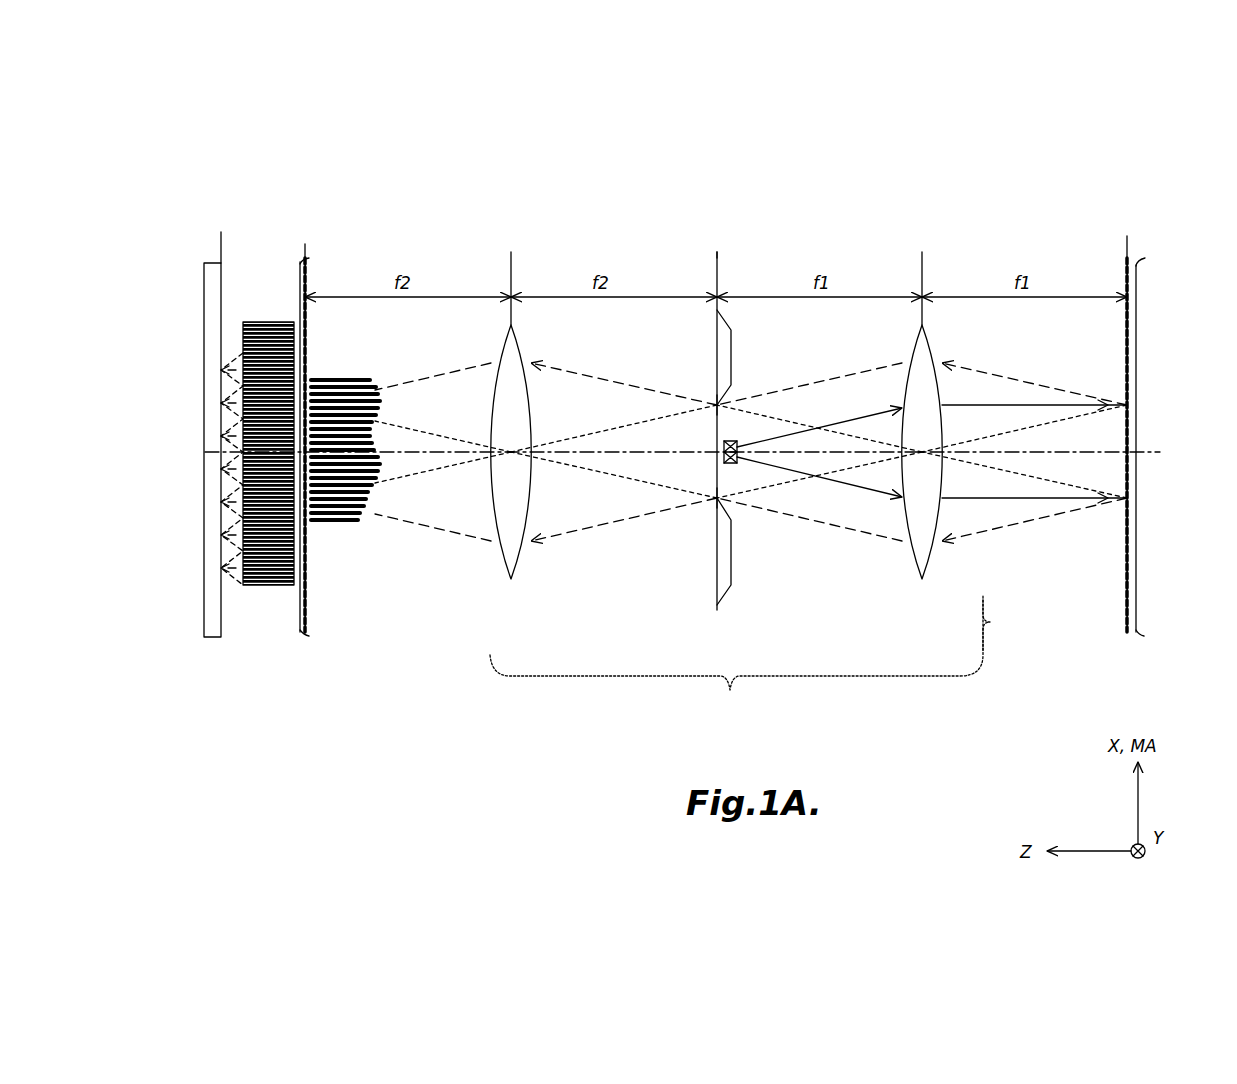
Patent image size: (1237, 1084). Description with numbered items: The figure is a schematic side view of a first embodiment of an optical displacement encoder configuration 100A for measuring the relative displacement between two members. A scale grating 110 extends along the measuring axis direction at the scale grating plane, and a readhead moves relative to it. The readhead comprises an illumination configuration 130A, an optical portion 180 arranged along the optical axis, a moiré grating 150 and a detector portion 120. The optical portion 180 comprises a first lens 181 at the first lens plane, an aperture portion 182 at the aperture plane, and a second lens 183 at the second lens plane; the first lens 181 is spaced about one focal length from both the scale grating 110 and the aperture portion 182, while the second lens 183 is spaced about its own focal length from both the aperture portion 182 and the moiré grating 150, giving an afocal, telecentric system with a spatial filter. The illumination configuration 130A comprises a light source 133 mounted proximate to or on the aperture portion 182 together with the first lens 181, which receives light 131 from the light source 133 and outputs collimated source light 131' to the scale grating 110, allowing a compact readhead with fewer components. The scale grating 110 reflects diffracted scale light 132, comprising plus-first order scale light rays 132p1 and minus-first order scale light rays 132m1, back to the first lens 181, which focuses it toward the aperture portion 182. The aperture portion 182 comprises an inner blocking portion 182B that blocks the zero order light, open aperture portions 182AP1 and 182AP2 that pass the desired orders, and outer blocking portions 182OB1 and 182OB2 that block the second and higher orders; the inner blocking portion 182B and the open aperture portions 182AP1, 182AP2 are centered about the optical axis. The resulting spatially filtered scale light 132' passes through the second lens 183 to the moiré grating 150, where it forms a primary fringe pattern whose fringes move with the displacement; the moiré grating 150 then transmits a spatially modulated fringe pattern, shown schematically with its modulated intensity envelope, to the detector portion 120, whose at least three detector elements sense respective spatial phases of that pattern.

The optical displacement encoder configuration 100A is at (1108, 164).
The scale grating 110 is at (1136, 634).
The detector portion 120 is at (213, 637).
The illumination configuration 130A is at (1011, 625).
The light 131 is at (846, 412).
The collimated source light 131' is at (1047, 491).
The diffracted scale light 132 is at (751, 403).
The spatially filtered scale light 132' is at (751, 375).
The +1 order scale light rays 132p1 is at (1000, 470).
The −1 order scale light rays 132m1 is at (995, 545).
The light source 133 is at (740, 466).
The moiré grating 150 is at (305, 634).
The optical portion 180 is at (740, 657).
The first lens 181 is at (922, 579).
The aperture portion 182 is at (720, 609).
The open aperture portion 182AP1 is at (724, 399).
The open aperture portion 182AP2 is at (724, 504).
The inner blocking portion 182B is at (740, 440).
The outer blocking portion 182OB1 is at (733, 338).
The outer blocking portion 182OB2 is at (731, 586).
The second lens 183 is at (511, 579).